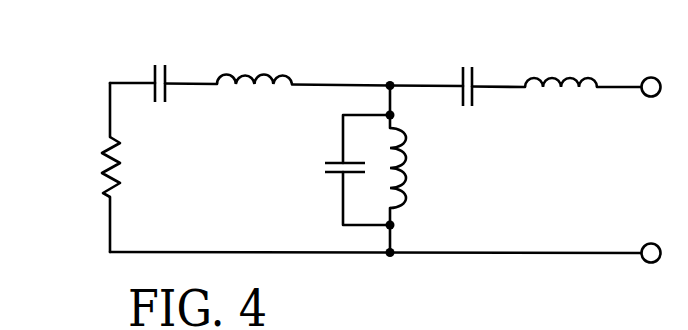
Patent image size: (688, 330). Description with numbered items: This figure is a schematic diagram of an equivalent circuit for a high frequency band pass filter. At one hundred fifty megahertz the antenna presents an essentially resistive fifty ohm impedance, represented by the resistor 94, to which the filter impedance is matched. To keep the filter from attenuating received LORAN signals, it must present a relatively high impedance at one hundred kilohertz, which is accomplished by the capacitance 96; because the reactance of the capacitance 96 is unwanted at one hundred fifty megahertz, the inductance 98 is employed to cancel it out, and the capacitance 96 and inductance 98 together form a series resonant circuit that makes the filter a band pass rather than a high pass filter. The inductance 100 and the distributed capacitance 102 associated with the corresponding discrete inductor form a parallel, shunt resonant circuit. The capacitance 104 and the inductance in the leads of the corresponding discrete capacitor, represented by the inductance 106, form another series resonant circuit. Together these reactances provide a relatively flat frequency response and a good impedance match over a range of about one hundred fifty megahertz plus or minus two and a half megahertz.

The resistor 94 is at (102, 178).
The capacitance 96 is at (153, 70).
The inductance 98 is at (243, 65).
The inductance 100 is at (412, 200).
The distributed capacitance 102 is at (342, 181).
The capacitance 104 is at (460, 78).
The inductance 106 is at (548, 72).